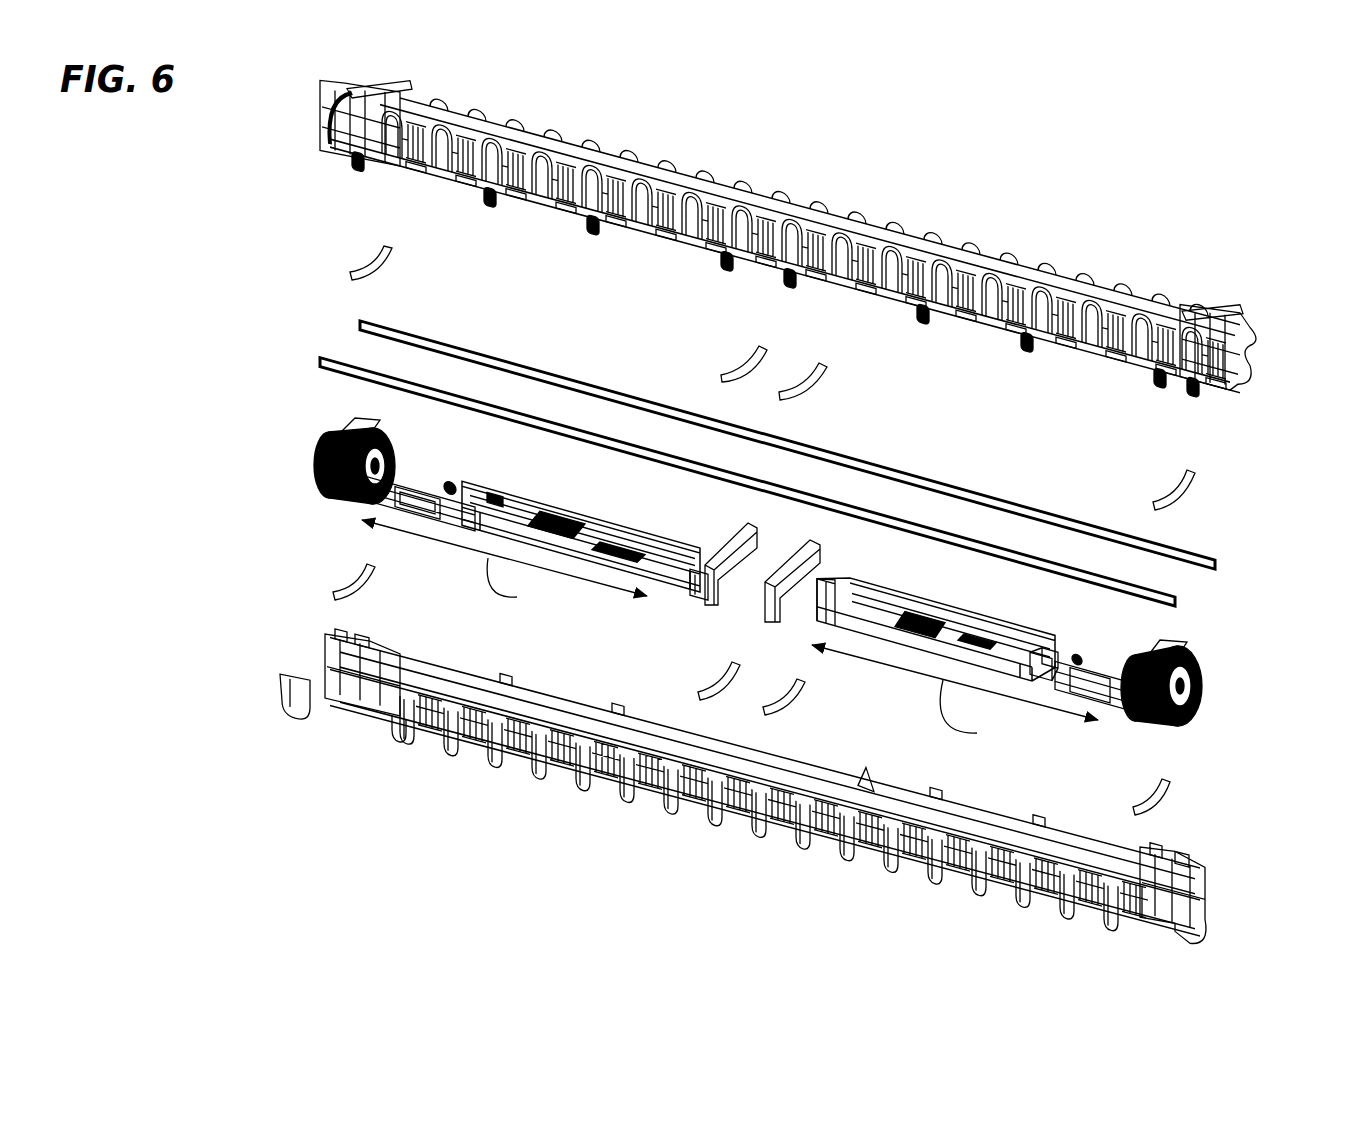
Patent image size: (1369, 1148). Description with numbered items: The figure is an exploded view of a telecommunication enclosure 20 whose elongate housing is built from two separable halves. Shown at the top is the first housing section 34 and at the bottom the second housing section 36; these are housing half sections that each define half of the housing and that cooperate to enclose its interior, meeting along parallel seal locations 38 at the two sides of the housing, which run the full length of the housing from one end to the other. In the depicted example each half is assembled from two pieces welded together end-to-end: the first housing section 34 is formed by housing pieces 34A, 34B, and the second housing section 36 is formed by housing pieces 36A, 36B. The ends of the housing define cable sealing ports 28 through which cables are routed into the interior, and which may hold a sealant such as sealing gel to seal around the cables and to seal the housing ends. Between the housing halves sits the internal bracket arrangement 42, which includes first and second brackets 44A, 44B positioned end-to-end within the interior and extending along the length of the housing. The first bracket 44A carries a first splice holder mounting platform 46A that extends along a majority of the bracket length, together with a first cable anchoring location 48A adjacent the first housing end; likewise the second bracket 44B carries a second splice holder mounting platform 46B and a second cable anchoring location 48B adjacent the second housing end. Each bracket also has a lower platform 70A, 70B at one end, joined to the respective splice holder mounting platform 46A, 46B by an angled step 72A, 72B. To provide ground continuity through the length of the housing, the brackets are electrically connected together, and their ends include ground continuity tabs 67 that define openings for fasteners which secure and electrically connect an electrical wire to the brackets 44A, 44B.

The telecommunication enclosure 20 is at (1176, 226).
The cable sealing ports 28 is at (323, 660).
The first housing section 34 is at (1017, 250).
The housing piece 34A is at (533, 123).
The housing piece 34B is at (1108, 288).
The second housing section 36 is at (774, 815).
The housing piece 36A is at (500, 763).
The housing piece 36B is at (903, 868).
The parallel seal locations 38 is at (397, 737).
The internal bracket arrangement 42 is at (1222, 660).
The first bracket 44A is at (612, 510).
The second bracket 44B is at (912, 597).
The first splice holder mounting platform 46A is at (578, 522).
The second splice holder mounting platform 46B is at (882, 606).
The first cable anchoring location 48A is at (435, 476).
The second cable anchoring location 48B is at (1113, 657).
The ground continuity tabs 67 is at (680, 563).
The lower platform 70A is at (357, 511).
The lower platform 70B is at (1118, 724).
The angled step 72A is at (482, 505).
The angled step 72B is at (1062, 653).